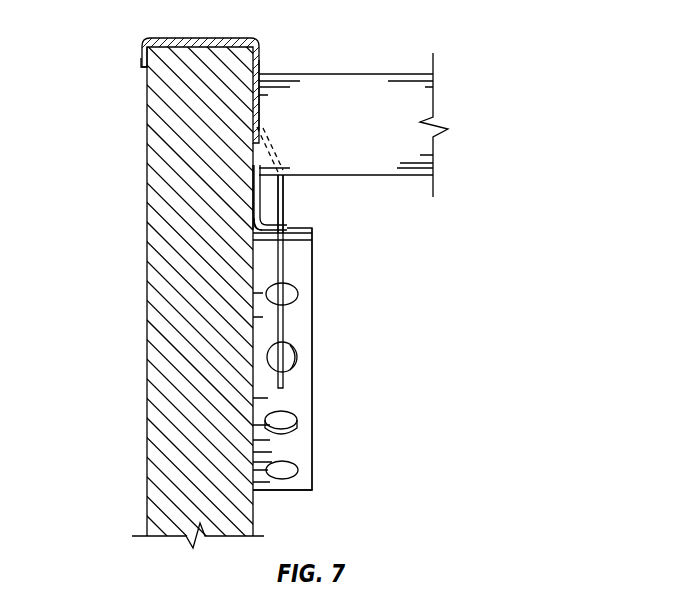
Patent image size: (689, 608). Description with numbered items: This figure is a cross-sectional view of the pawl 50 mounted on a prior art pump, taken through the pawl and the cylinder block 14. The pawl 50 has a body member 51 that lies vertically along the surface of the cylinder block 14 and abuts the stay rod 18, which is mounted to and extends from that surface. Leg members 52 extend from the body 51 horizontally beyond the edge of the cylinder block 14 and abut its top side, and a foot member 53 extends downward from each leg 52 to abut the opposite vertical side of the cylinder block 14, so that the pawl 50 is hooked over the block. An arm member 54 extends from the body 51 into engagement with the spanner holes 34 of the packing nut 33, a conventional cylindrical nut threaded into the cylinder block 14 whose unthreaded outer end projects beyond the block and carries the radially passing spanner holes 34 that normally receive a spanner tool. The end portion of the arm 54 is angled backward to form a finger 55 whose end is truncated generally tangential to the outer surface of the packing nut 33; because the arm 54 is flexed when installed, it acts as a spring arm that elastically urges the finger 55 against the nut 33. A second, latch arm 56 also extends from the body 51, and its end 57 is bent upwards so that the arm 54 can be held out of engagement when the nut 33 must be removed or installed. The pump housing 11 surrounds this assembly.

The panel 11 is at (146, 298).
The cylinder block 14 is at (157, 118).
The stay rod 18 is at (382, 122).
The packing nut 33 is at (305, 467).
The spanner holes 34 is at (293, 352).
The pawl 50 is at (288, 186).
The body member 51 is at (261, 68).
The leg member 52 is at (178, 37).
The foot member 53 is at (141, 62).
The arm member 54 is at (287, 203).
The finger 55 is at (285, 388).
The latch arm 56 is at (252, 183).
The end of latch arm 57 is at (258, 220).